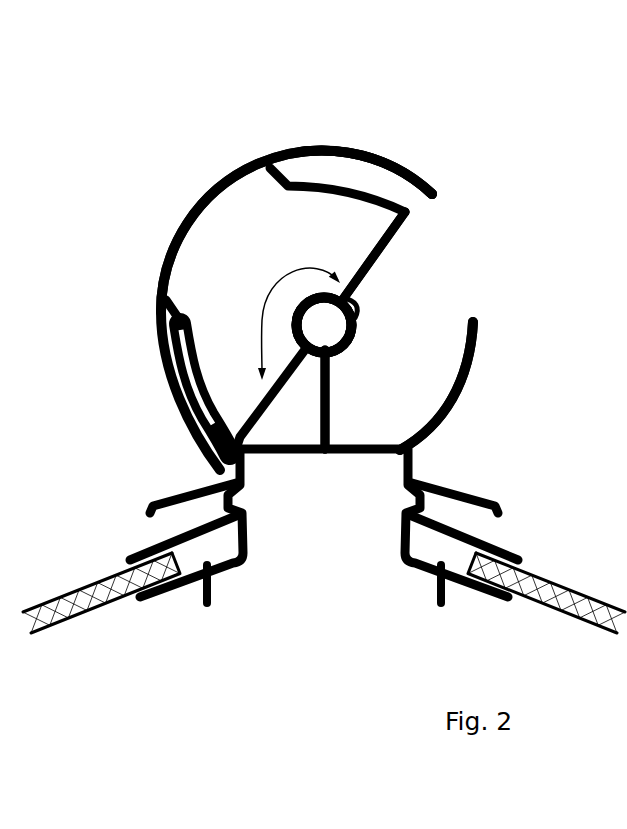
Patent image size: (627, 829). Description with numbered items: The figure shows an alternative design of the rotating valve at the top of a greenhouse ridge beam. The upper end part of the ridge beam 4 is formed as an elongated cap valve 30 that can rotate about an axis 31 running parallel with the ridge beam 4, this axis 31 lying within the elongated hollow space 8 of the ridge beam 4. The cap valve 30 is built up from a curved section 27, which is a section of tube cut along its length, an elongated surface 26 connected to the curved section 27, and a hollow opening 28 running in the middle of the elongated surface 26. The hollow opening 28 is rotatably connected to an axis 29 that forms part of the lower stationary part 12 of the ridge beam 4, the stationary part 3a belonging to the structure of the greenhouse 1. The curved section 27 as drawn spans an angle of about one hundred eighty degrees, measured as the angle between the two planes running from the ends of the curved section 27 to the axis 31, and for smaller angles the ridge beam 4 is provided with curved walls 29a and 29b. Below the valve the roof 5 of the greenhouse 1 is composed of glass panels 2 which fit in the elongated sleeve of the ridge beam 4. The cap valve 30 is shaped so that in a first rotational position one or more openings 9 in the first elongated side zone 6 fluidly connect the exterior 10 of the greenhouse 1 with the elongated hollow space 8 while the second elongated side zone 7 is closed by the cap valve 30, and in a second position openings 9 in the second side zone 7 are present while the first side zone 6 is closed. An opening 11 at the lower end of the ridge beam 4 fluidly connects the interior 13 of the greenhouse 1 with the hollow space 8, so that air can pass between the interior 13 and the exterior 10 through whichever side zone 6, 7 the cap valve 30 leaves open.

The greenhouse 1 is at (107, 607).
The glass panels 2 is at (97, 588).
The stationary part 3a is at (228, 565).
The ridge beam 4 is at (462, 403).
The roof 5 is at (53, 597).
The first elongated side zone 6 is at (167, 270).
The second elongated side zone 7 is at (477, 358).
The elongated hollow space 8 is at (420, 315).
The closable openings 9 is at (445, 263).
The exterior 10 is at (321, 108).
The opening 11 is at (290, 455).
The lower stationary part 12 is at (383, 457).
The interior 13 is at (322, 672).
The elongated surface 26 is at (385, 245).
The curved section 27 is at (352, 182).
The hollow opening 28 is at (313, 287).
The axis 29 is at (353, 342).
The curved wall 29a is at (183, 388).
The curved wall 29b is at (450, 423).
The cap valve 30 is at (395, 172).
The axis 31 is at (322, 322).